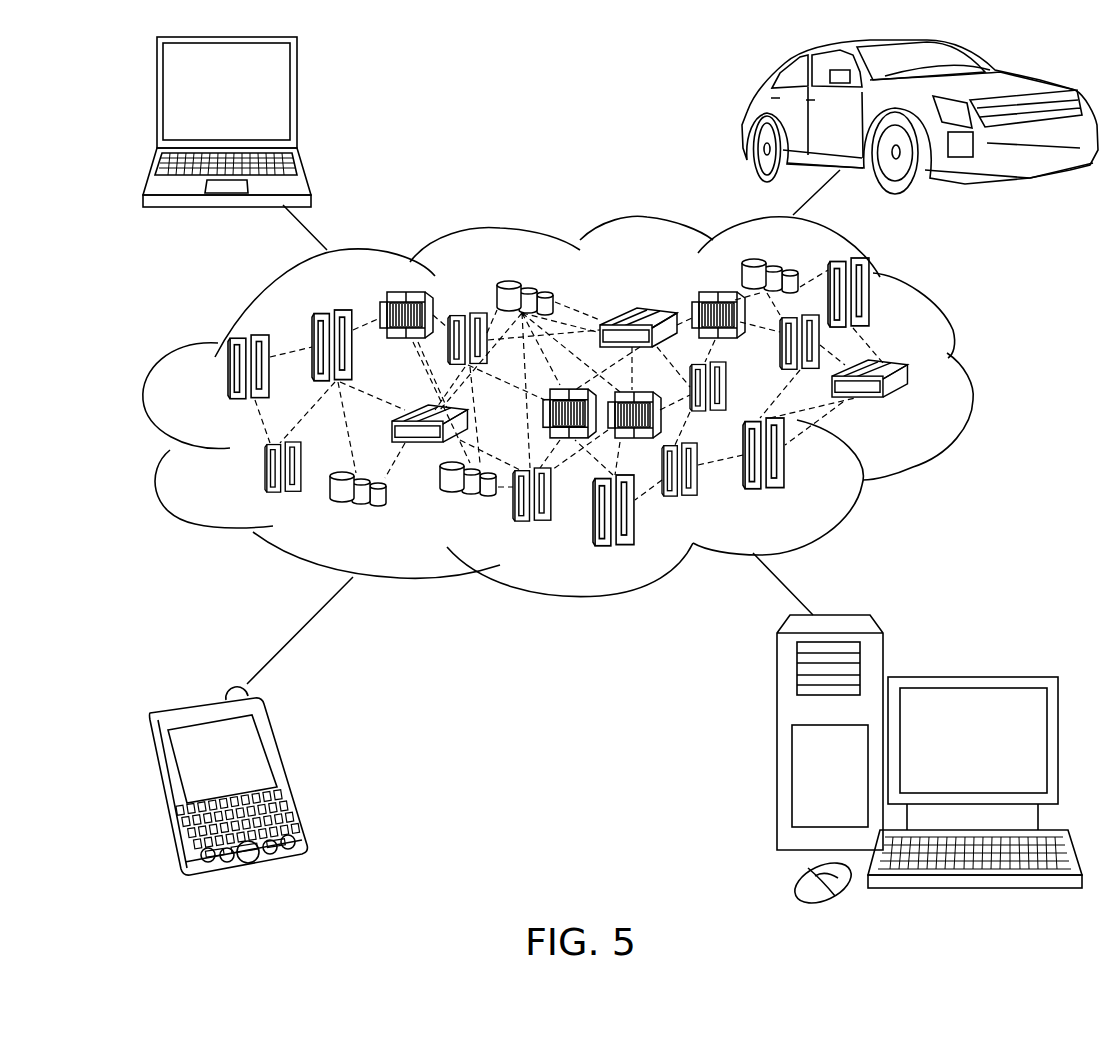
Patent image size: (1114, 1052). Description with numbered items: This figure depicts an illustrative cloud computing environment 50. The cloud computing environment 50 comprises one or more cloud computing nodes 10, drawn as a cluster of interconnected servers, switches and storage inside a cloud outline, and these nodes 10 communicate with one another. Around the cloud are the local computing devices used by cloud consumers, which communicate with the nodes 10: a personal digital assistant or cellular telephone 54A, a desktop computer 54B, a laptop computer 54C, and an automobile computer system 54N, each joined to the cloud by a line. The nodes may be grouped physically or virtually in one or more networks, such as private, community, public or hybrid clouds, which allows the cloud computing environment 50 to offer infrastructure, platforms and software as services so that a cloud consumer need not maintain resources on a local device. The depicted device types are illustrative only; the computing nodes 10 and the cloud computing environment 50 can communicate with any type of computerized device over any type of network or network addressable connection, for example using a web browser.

The cloud computing nodes 10 is at (925, 428).
The cloud computing environment 50 is at (970, 380).
The personal digital assistant (PDA) or cellular telephone 54A is at (290, 769).
The desktop computer 54B is at (970, 676).
The laptop computer 54C is at (297, 100).
The automobile computer system 54N is at (746, 118).